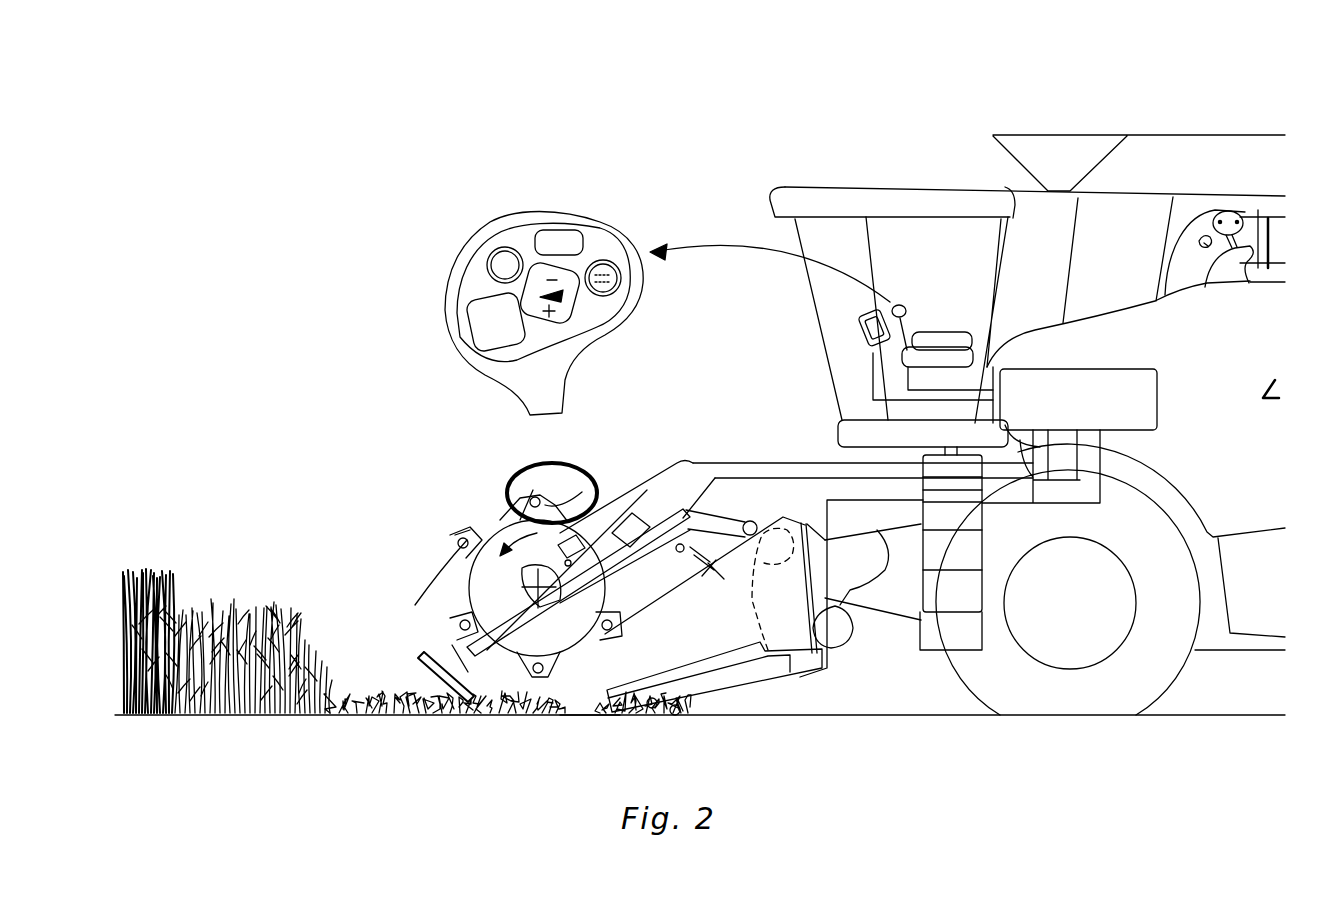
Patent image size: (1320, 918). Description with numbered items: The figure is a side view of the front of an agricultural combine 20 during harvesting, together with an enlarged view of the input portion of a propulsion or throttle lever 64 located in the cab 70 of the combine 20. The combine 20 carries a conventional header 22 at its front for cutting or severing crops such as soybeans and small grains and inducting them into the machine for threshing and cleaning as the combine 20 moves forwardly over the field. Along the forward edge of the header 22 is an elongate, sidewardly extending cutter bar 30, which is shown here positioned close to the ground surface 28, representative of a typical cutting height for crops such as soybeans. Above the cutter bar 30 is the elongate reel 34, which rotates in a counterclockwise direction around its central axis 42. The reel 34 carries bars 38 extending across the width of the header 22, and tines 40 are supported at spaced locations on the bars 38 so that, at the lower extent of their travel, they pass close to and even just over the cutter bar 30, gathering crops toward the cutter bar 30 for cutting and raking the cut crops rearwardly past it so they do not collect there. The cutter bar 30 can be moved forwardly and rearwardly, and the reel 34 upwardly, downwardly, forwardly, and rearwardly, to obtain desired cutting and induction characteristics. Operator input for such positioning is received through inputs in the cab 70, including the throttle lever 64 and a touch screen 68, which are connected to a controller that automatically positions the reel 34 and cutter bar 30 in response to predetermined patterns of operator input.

The agricultural combine 20 is at (940, 120).
The header 22 is at (382, 510).
The ground surface 28 is at (1183, 716).
The cutter bar 30 is at (583, 717).
The reel 34 is at (483, 512).
The bars 38 is at (447, 597).
The tines 40 is at (455, 535).
The central axis 42 is at (632, 611).
The throttle lever 64 is at (565, 212).
The touch screen 68 is at (863, 337).
The cab 70 is at (831, 186).